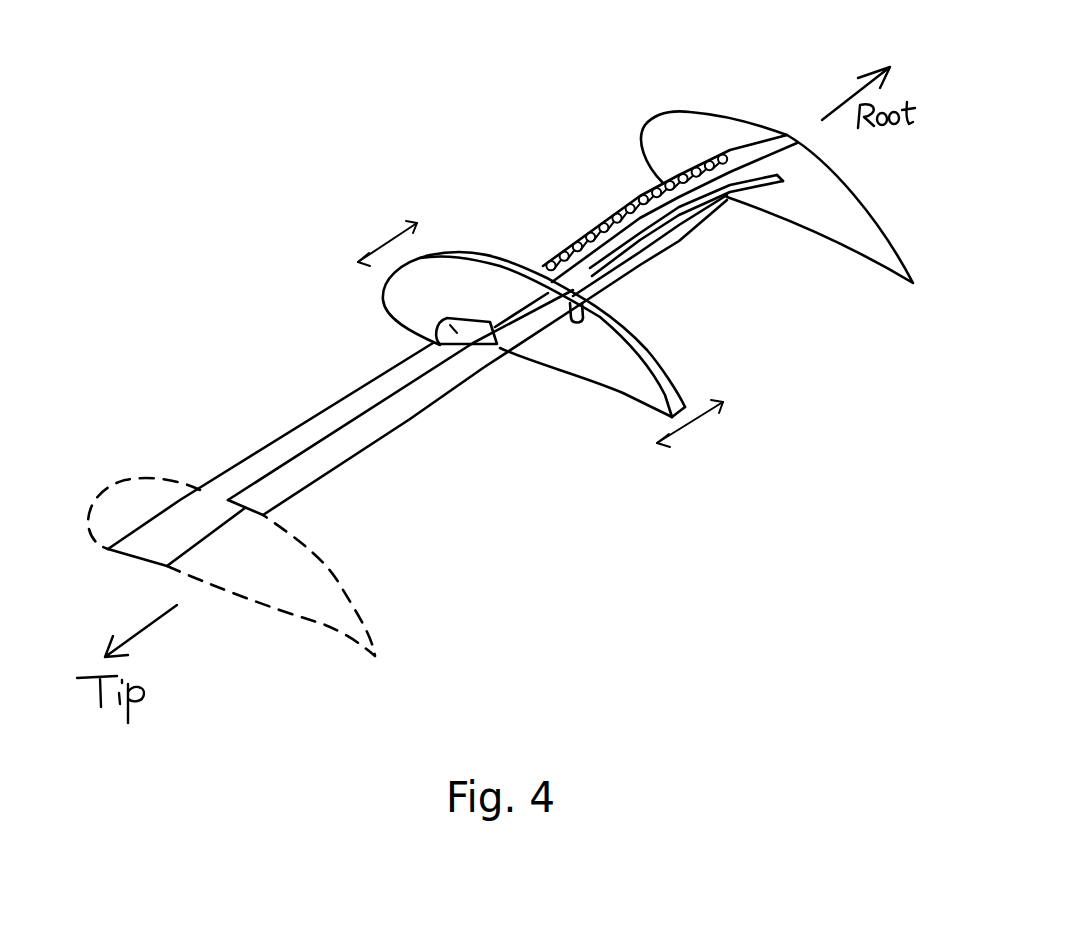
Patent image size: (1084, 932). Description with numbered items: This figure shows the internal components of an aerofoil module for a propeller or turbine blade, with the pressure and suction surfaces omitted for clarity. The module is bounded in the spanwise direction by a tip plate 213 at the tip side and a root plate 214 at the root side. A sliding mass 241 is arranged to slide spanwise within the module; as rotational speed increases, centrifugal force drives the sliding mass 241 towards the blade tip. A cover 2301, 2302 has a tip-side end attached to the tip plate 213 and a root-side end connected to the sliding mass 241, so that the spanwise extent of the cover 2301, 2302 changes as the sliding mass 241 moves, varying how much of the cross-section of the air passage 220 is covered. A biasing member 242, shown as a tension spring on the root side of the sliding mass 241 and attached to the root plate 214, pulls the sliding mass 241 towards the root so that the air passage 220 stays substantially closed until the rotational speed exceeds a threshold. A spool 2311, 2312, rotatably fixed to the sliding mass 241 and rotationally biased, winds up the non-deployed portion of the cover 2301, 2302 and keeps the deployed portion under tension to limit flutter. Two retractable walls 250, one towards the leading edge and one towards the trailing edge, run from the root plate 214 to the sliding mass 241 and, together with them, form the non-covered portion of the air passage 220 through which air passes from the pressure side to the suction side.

The root plate 214 is at (702, 113).
The retractable walls 250 is at (634, 207).
The air passage 220 is at (643, 263).
The cover 2302 is at (260, 467).
The cover 2301 is at (313, 472).
The spool 2312 is at (437, 319).
The spool 2311 is at (578, 322).
The biasing member 242 is at (585, 237).
The sliding mass 241 is at (612, 383).
The tip plate 213 is at (317, 603).